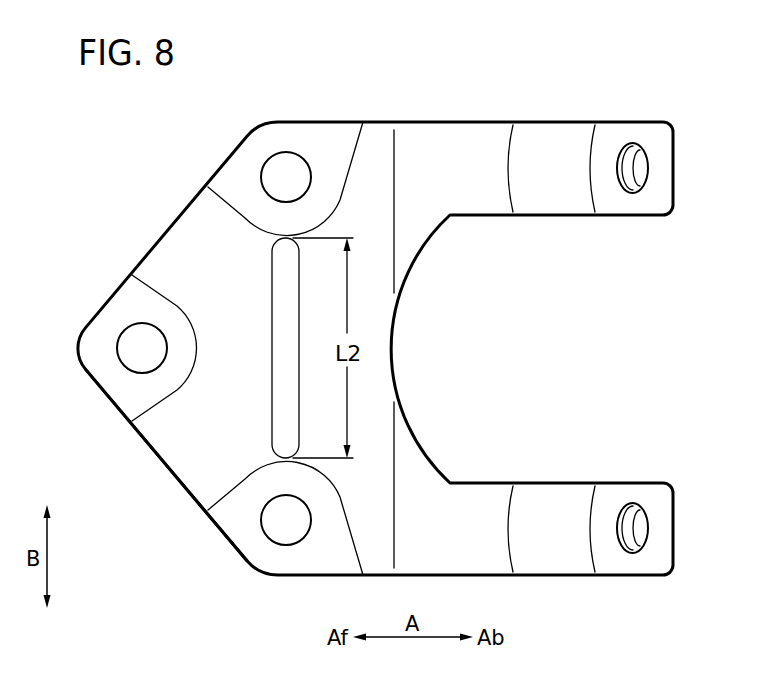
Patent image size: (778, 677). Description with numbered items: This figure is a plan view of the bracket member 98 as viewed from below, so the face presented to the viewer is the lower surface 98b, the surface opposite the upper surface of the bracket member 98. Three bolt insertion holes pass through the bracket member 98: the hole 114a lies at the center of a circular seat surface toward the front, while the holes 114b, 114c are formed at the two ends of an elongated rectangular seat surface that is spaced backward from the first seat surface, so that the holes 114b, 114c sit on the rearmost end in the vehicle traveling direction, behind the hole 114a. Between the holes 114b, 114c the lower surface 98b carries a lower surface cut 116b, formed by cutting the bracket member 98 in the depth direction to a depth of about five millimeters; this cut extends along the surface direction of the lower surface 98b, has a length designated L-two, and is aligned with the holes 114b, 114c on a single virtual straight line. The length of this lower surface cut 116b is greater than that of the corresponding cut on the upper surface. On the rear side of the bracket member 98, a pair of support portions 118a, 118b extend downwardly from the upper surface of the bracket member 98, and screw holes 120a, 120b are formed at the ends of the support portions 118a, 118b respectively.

The bracket member 98 is at (676, 81).
The lower surface 98b is at (168, 438).
The hole 114a is at (135, 342).
The hole 114b is at (274, 527).
The hole 114c is at (270, 172).
The lower surface cut 116b is at (280, 285).
The support portion 118a is at (553, 565).
The support portion 118b is at (553, 132).
The screw hole 120a is at (638, 530).
The screw hole 120b is at (638, 172).